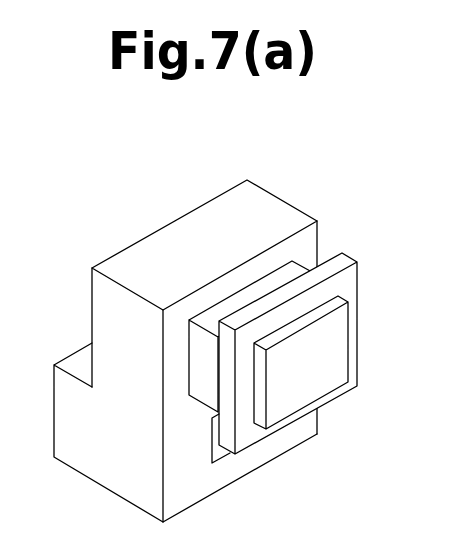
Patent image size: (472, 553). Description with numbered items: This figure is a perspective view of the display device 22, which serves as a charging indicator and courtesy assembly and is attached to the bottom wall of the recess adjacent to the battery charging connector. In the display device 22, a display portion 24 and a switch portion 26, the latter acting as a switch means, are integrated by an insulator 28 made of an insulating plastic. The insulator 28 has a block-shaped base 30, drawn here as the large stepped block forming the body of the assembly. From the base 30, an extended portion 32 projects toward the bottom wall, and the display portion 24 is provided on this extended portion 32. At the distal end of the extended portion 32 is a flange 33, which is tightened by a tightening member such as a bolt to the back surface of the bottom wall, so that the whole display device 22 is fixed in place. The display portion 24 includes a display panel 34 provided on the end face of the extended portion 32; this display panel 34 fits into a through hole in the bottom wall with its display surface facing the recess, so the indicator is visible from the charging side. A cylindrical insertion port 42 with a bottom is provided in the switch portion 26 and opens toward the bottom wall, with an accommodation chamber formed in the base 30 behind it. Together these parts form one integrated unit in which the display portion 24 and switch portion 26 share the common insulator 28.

The display device 22 is at (338, 132).
The display portion 24 is at (379, 406).
The switch portion 26 is at (74, 494).
The insulator 28 is at (127, 255).
The base 30 is at (283, 208).
The extended portion 32 is at (255, 292).
The flange 33 is at (325, 265).
The display panel 34 is at (330, 383).
The insertion port 42 is at (213, 458).